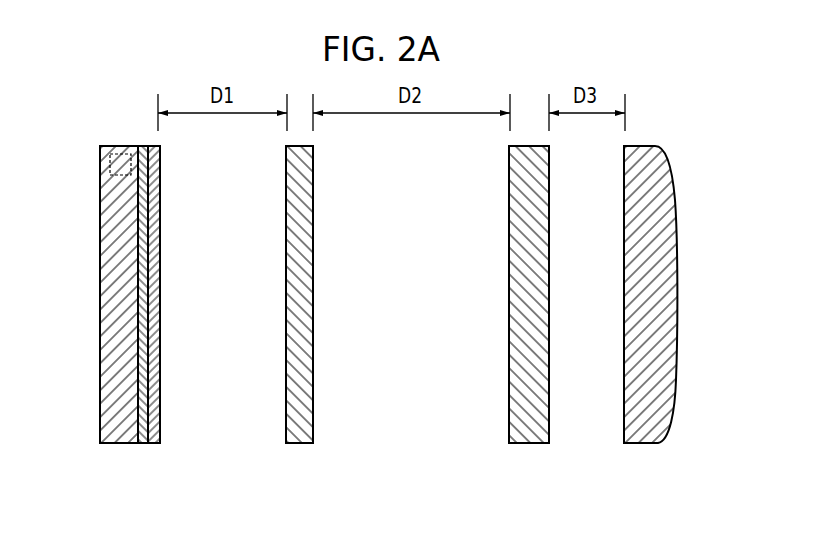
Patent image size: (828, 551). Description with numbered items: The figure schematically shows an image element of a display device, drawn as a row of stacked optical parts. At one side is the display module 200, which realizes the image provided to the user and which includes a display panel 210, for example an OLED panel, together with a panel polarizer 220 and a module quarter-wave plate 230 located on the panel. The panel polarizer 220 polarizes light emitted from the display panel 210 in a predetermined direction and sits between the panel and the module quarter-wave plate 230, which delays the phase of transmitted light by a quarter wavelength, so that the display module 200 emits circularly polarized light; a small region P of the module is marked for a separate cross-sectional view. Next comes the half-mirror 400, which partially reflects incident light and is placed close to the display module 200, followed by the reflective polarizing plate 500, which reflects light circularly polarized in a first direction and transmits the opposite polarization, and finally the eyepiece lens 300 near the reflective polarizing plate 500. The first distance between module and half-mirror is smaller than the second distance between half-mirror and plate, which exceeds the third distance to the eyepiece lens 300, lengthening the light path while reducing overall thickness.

The display module 200 is at (146, 317).
The display panel 210 is at (105, 443).
The panel polarizer 220 is at (141, 443).
The module quarter-wave plate 230 is at (155, 443).
The region P is at (121, 153).
The eyepiece lens 300 is at (636, 443).
The half-mirror 400 is at (297, 443).
The reflective polarizing plate 500 is at (528, 443).